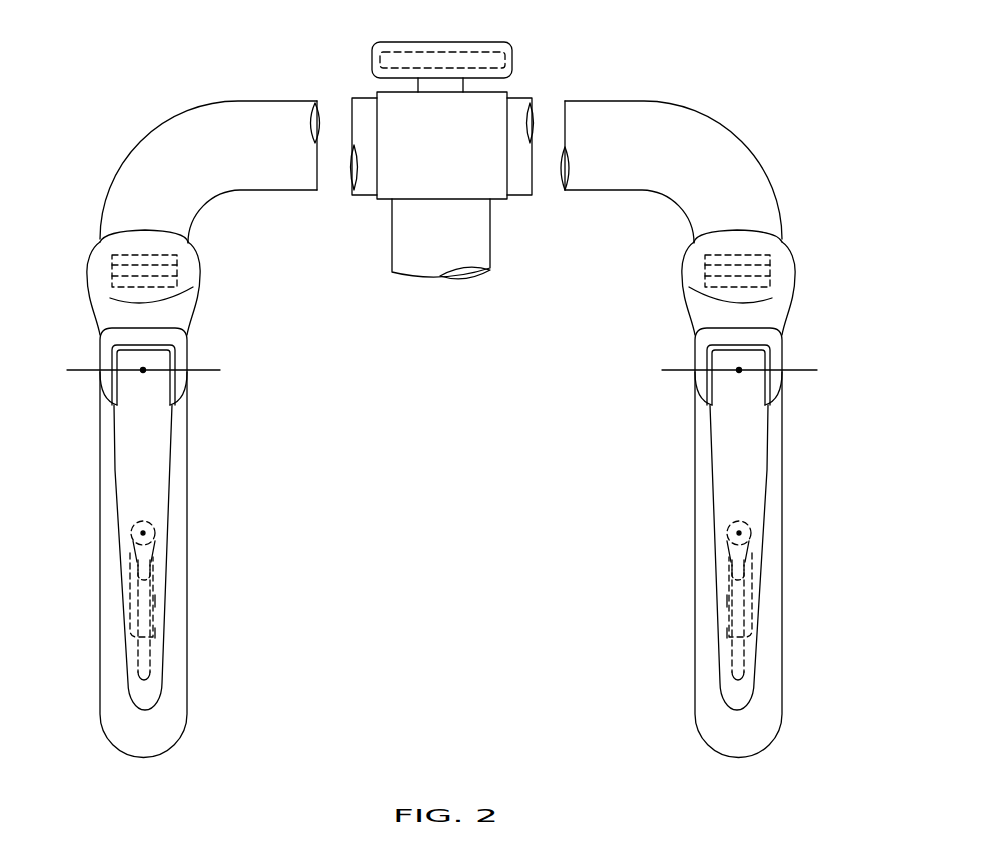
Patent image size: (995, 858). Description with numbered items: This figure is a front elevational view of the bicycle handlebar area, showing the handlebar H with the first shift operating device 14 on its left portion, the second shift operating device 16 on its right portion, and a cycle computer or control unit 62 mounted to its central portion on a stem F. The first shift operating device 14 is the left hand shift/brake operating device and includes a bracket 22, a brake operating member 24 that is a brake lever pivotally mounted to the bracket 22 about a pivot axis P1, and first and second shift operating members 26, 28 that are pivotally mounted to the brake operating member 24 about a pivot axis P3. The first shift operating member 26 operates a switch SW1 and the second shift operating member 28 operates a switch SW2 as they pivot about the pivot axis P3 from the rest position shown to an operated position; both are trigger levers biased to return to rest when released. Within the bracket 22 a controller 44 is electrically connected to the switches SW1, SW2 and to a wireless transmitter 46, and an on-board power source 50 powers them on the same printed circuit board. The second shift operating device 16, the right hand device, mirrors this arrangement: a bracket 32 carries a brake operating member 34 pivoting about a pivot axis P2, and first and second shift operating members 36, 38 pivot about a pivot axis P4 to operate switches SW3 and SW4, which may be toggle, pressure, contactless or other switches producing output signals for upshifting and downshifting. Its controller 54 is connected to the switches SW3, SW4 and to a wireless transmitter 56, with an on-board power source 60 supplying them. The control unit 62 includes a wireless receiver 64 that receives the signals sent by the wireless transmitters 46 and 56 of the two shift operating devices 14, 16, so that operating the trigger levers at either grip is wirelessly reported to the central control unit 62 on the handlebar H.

The handlebar H is at (638, 34).
The control unit 62 is at (430, 42).
The wireless receiver 64 is at (473, 62).
The frame stem F is at (453, 232).
The second shift operating device 16 is at (220, 454).
The first shift operating device 14 is at (636, 454).
The bracket 32 is at (200, 256).
The bracket 22 is at (795, 256).
The on-board power source 60 is at (134, 255).
The on-board power source 50 is at (728, 255).
The controller 54 is at (112, 266).
The wireless transmitter 56 is at (112, 280).
The controller 44 is at (707, 266).
The wireless transmitter 46 is at (707, 280).
The pivot axis P2 is at (205, 370).
The pivot axis P1 is at (677, 370).
The brake operating member 34 is at (170, 492).
The brake operating member 24 is at (712, 490).
The pivot axis P4 is at (150, 532).
The pivot axis P3 is at (734, 534).
The first shift operating member 36 is at (130, 598).
The second shift operating member 38 is at (182, 657).
The first shift operating member 26 is at (750, 590).
The second shift operating member 28 is at (700, 657).
The switch SW1 is at (753, 610).
The switch SW2 is at (728, 628).
The switch SW3 is at (131, 617).
The switch SW4 is at (155, 632).